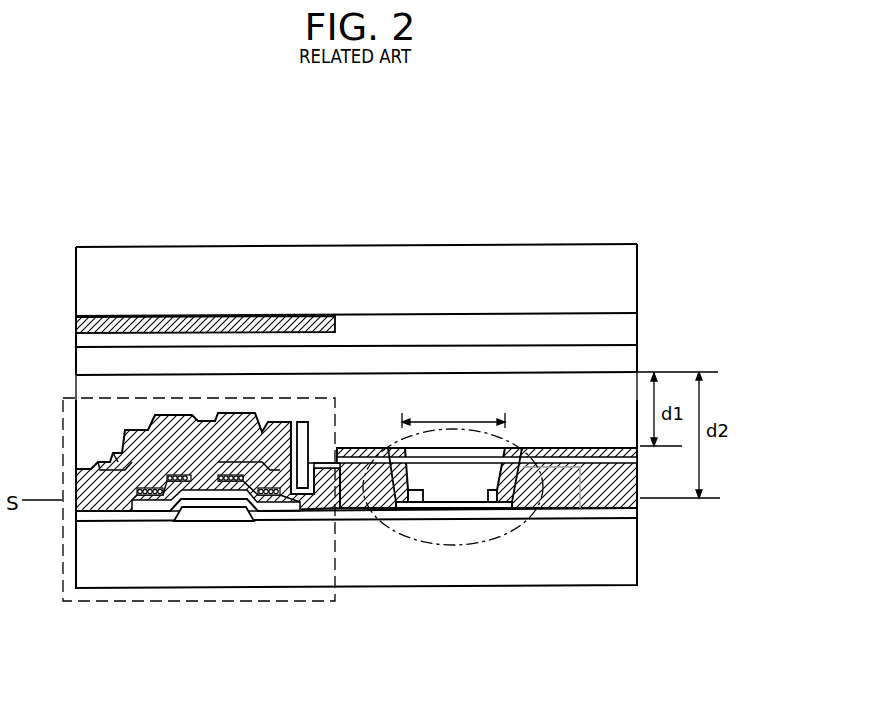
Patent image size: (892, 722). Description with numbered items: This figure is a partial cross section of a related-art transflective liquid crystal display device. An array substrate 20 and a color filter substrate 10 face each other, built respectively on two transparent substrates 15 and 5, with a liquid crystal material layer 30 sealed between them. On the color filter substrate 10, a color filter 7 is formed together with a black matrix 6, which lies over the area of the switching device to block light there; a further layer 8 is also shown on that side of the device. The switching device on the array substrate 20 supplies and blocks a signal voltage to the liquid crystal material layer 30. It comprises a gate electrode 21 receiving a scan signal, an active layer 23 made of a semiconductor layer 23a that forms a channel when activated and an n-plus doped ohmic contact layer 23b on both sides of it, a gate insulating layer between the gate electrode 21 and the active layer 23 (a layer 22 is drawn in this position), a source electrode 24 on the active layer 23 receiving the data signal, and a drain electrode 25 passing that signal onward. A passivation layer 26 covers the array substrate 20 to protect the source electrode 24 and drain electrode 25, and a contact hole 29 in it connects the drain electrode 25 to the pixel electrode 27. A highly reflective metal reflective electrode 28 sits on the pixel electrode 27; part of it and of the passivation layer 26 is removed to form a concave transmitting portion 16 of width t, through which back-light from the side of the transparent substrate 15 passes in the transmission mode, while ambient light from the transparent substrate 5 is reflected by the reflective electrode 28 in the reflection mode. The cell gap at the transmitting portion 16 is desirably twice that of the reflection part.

The transparent substrate 5 is at (630, 276).
The black matrix 6 is at (76, 323).
The color filter 7 is at (630, 328).
The common electrode 8 is at (82, 360).
The color filter substrate 10 is at (350, 273).
The liquid crystal material layer 30 is at (82, 388).
The transparent substrate 15 is at (640, 562).
The array substrate 20 is at (388, 440).
The gate electrode 21 is at (207, 516).
The gate insulating layer 22 is at (640, 514).
The active layer 23 is at (224, 578).
The semiconductor layer 23a is at (277, 500).
The ohmic contact layer 23b is at (262, 497).
The source electrode 24 is at (181, 455).
The drain electrode 25 is at (247, 420).
The passivation layer 26 is at (352, 508).
The pixel electrode 27 is at (408, 500).
The reflective electrode 28 is at (494, 500).
The contact hole 29 is at (303, 468).
The transmitting portion 16 is at (518, 441).